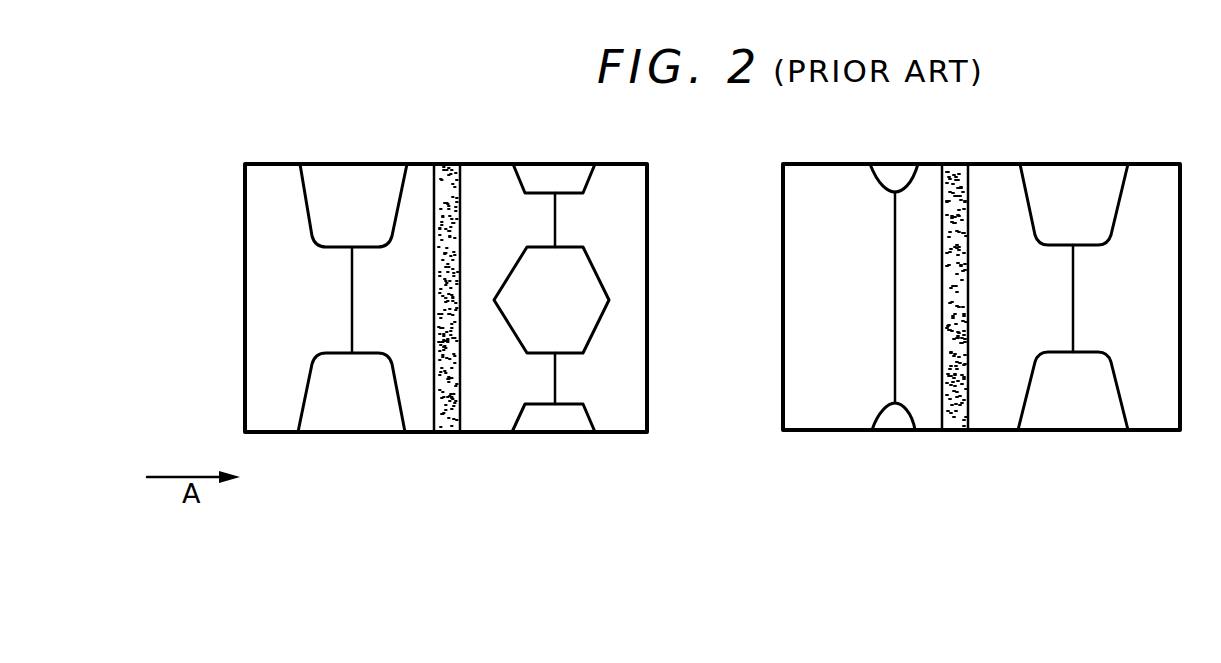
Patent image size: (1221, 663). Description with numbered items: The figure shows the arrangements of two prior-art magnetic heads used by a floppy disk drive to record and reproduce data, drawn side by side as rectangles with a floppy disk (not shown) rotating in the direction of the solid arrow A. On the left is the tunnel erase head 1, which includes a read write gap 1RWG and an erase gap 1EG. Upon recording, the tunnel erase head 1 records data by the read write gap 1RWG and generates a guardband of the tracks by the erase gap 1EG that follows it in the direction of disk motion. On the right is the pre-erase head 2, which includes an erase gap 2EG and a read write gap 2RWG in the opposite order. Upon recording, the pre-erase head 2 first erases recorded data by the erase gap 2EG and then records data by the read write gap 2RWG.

The tunnel erase head 1 is at (290, 164).
The pre-erase head 2 is at (840, 164).
The read write gap 1RWG is at (330, 433).
The erase gap 1EG is at (567, 433).
The erase gap 2EG is at (897, 431).
The read write gap 2RWG is at (1080, 431).